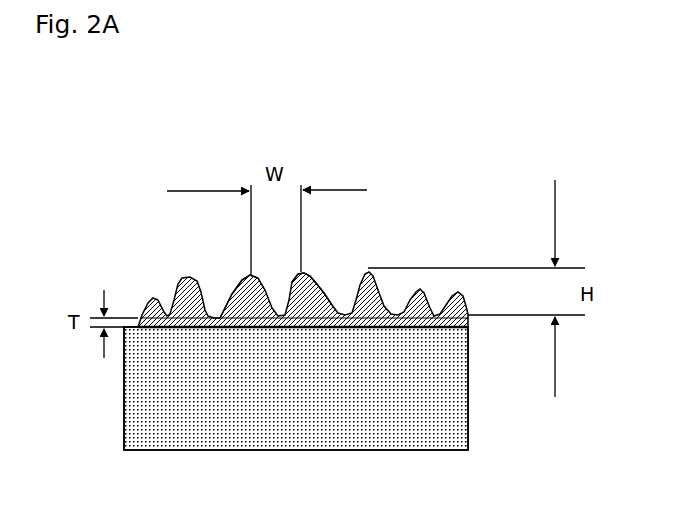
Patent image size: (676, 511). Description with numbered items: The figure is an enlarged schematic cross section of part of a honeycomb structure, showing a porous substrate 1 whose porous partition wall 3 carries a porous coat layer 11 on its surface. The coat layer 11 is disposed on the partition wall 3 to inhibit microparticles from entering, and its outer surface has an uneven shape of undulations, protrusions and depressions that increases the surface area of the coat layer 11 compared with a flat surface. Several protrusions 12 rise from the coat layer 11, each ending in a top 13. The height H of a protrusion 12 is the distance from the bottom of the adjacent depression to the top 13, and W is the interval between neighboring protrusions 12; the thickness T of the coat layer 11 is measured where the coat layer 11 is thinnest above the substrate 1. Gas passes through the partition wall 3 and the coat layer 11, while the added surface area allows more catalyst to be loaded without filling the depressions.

The porous substrate 1 is at (246, 455).
The partition wall 3 is at (468, 410).
The coat layer 11 is at (162, 285).
The protrusion 12 is at (232, 294).
The top of the protrusion 13 is at (247, 276).